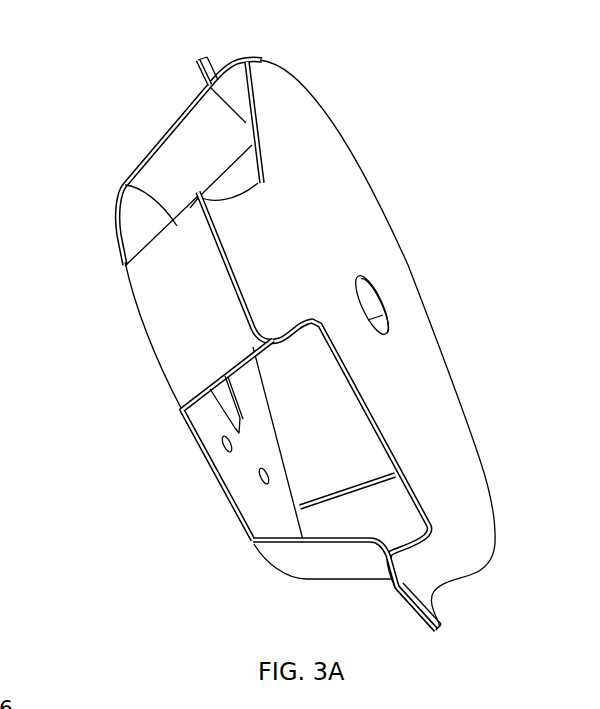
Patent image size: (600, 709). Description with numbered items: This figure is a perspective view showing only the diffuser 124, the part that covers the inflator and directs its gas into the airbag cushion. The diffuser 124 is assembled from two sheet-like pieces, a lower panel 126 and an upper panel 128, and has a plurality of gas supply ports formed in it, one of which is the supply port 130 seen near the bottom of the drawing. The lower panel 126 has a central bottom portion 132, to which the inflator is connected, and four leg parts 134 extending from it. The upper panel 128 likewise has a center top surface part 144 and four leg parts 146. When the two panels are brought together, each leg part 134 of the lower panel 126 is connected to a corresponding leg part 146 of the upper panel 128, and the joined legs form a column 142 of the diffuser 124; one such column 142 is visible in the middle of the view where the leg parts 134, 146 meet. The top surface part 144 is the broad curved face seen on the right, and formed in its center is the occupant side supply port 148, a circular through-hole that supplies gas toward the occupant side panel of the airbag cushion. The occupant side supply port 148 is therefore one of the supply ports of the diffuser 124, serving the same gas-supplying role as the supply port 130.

The diffuser 124 is at (103, 84).
The lower panel 126 is at (112, 222).
The upper panel 128 is at (321, 107).
The supply port 130 is at (327, 534).
The bottom portion 132 is at (238, 475).
The leg part 134 is at (148, 288).
The column 142 is at (205, 338).
The top surface part 144 is at (440, 400).
The leg part 146 is at (260, 243).
The occupant side supply port 148 is at (380, 290).